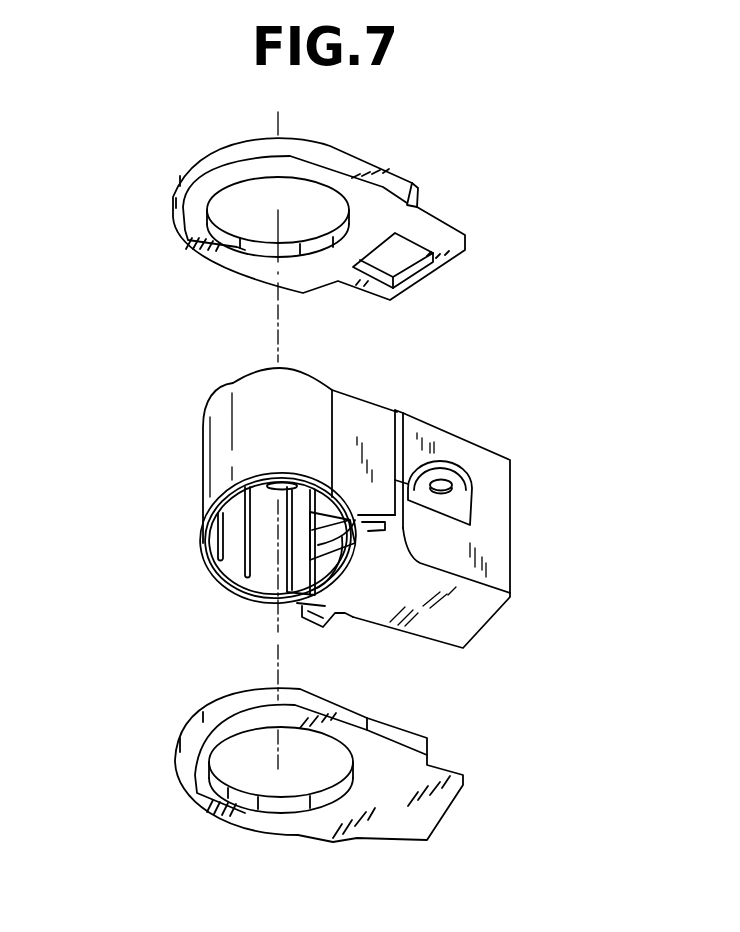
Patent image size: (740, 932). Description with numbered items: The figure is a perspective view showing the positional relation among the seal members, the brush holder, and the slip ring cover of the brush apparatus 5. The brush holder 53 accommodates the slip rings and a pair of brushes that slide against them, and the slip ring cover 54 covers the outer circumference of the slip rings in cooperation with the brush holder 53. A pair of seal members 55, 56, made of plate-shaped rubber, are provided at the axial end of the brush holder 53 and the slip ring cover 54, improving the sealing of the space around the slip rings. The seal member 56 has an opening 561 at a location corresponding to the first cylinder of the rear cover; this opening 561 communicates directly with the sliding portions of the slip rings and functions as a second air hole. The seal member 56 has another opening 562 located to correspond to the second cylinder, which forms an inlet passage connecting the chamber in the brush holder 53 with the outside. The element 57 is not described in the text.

The brush apparatus 5 is at (372, 494).
The brush holder 53 is at (497, 552).
The slip ring cover 54 is at (248, 388).
The seal member 55 is at (465, 768).
The seal member 56 is at (435, 225).
The opening 561 is at (232, 207).
The opening 562 is at (402, 257).
The flange portion 57 is at (183, 243).